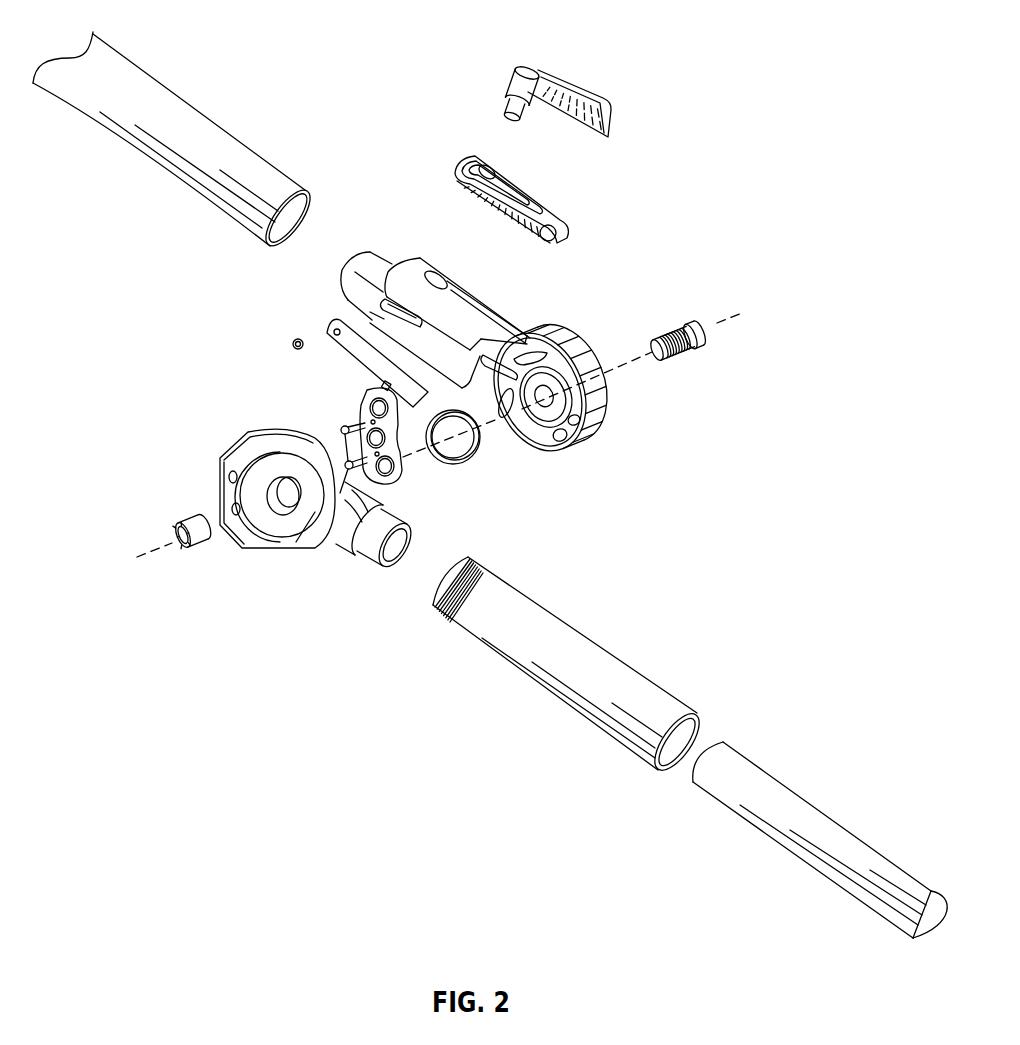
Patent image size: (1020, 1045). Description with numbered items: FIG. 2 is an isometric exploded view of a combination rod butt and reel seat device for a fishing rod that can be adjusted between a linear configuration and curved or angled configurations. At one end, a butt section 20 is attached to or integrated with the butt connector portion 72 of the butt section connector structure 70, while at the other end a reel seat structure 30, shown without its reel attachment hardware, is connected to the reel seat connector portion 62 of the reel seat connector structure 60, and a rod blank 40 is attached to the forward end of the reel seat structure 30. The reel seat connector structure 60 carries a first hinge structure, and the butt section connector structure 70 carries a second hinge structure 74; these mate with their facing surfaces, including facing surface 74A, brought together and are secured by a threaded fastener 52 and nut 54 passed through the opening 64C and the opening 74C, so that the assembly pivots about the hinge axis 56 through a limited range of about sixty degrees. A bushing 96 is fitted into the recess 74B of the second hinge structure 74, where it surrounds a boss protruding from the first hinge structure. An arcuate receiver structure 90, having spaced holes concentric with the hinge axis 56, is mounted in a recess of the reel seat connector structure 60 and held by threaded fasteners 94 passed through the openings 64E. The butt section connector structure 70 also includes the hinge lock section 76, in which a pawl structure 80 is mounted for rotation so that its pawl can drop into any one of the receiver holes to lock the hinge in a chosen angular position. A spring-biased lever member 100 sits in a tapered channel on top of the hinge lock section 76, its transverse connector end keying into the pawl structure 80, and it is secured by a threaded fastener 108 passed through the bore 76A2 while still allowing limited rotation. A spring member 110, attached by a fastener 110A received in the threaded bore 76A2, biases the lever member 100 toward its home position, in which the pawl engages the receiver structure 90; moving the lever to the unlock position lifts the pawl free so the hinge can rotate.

The butt section 20 is at (140, 155).
The reel seat structure 30 is at (556, 708).
The rod blank 40 is at (786, 860).
The threaded fastener 52 is at (690, 363).
The nut 54 is at (202, 550).
The hinge axis 56 is at (735, 317).
The reel seat connector structure 60 is at (283, 539).
The reel seat connector portion 62 is at (367, 563).
The opening 64C is at (258, 532).
The openings 64E is at (228, 471).
The butt section connector structure 70 is at (568, 476).
The butt connector portion 72 is at (390, 252).
The second hinge structure 74 is at (557, 408).
The facing surface 74A is at (536, 404).
The recess 74B is at (570, 418).
The opening 74C is at (545, 408).
The hinge lock section 76 is at (401, 311).
The bore 76A2 is at (377, 322).
The pawl structure 80 is at (465, 163).
The receiver structure 90 is at (341, 437).
The threaded fasteners 94 is at (294, 520).
The bushing 96 is at (432, 468).
The lever member 100 is at (573, 80).
The threaded fastener 108 is at (379, 386).
The spring member 110 is at (317, 363).
The fastener 110A is at (255, 359).